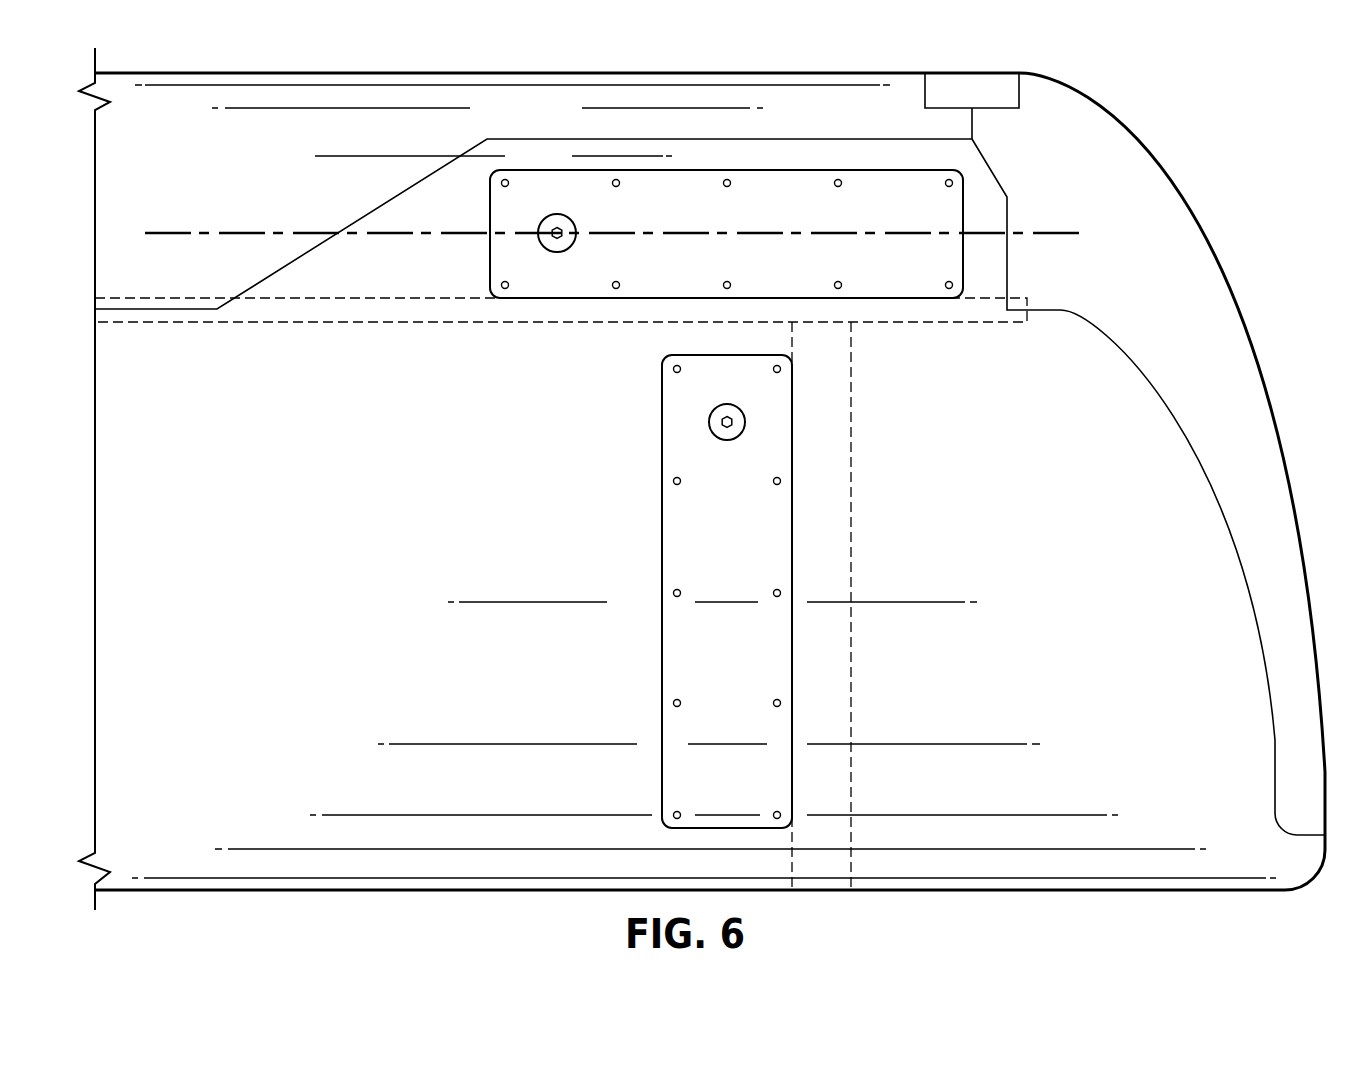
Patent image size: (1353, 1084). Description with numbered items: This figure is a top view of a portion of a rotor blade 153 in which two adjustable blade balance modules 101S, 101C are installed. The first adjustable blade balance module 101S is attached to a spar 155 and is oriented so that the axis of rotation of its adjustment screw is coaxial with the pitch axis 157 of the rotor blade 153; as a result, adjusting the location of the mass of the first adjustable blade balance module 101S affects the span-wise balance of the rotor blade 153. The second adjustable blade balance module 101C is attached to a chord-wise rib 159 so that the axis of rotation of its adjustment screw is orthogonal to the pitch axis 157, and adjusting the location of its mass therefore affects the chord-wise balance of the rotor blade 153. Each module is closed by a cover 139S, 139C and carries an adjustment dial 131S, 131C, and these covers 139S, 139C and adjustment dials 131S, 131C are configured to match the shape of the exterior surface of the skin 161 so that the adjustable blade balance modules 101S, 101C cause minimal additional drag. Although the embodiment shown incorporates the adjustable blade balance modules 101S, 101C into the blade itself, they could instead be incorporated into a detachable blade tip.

The first adjustable blade balance module 101S is at (672, 196).
The second adjustable blade balance module 101C is at (673, 591).
The adjustment dial 131S is at (557, 214).
The adjustment dial 131C is at (711, 416).
The cover 139S is at (805, 177).
The cover 139C is at (668, 652).
The rotor blade 153 is at (1218, 254).
The spar 155 is at (267, 323).
The pitch axis 157 is at (245, 232).
The chord-wise rib 159 is at (850, 647).
The skin 161 is at (413, 561).